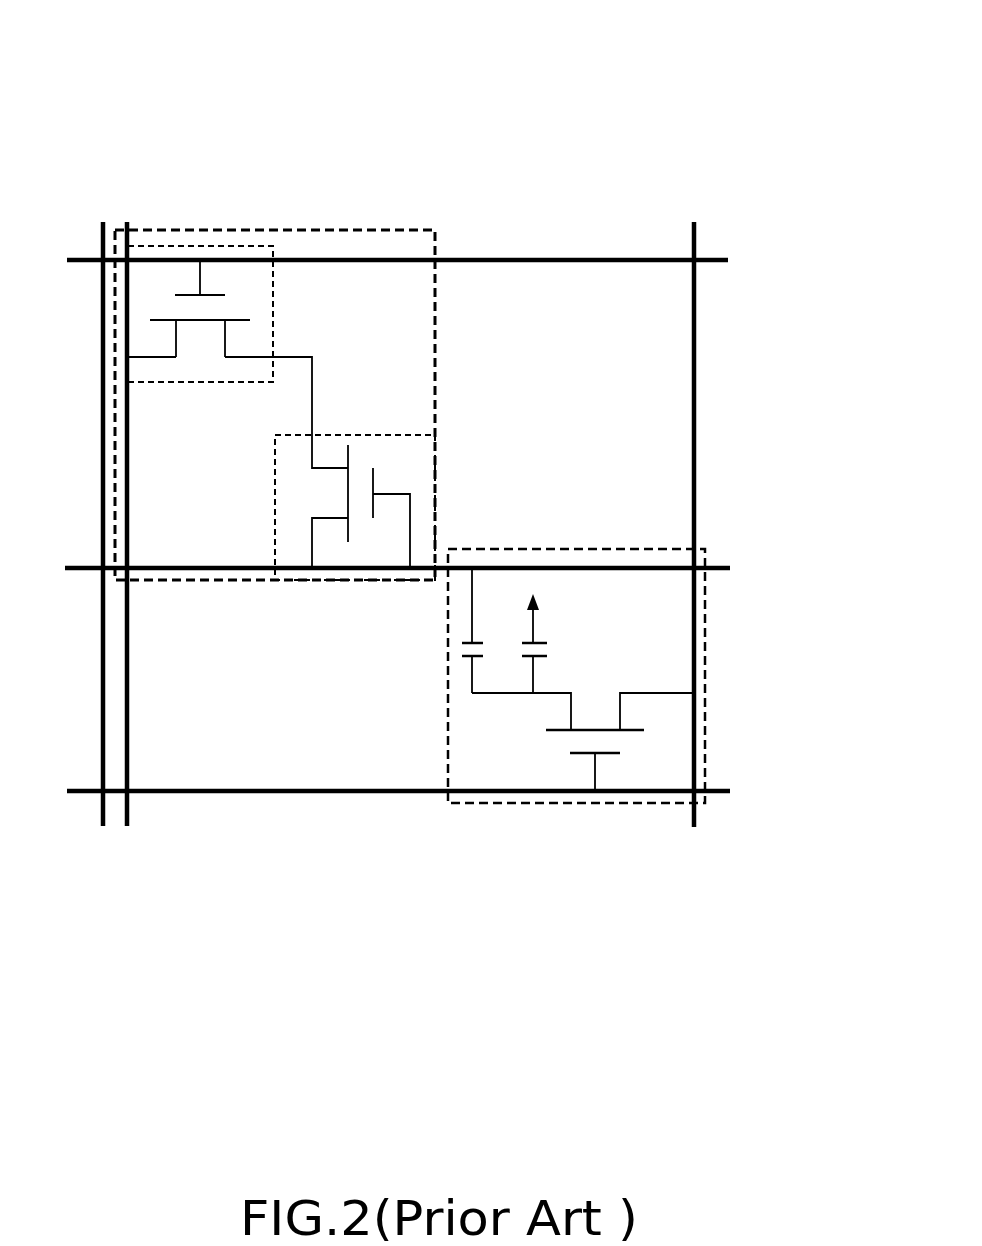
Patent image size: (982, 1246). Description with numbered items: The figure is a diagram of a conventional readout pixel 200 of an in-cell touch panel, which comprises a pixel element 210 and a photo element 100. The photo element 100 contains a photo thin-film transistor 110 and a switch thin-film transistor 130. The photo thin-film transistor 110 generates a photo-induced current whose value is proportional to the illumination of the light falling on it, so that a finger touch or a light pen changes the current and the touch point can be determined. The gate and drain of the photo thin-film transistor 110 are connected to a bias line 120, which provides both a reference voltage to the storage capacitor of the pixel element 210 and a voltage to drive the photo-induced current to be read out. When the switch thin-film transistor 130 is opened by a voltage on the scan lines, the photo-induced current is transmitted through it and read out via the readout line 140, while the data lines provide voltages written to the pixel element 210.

The readout pixel 200 is at (130, 103).
The photo element 100 is at (330, 230).
The photo thin-film transistor 110 is at (398, 432).
The bias line 120 is at (708, 565).
The switch thin-film transistor 130 is at (190, 246).
The readout line 140 is at (127, 810).
The pixel element 210 is at (705, 672).